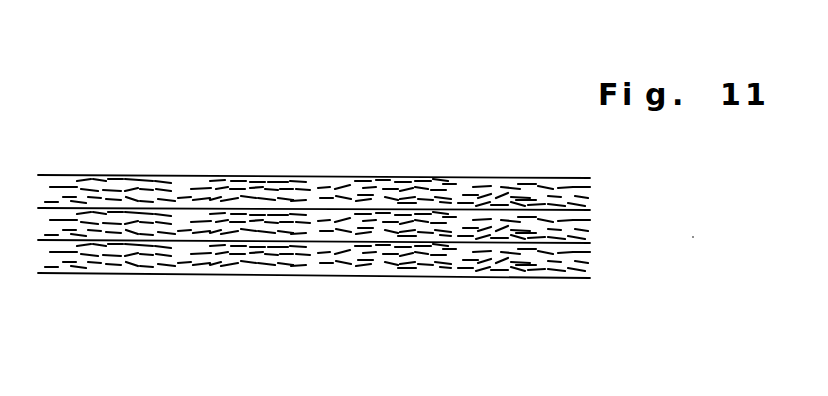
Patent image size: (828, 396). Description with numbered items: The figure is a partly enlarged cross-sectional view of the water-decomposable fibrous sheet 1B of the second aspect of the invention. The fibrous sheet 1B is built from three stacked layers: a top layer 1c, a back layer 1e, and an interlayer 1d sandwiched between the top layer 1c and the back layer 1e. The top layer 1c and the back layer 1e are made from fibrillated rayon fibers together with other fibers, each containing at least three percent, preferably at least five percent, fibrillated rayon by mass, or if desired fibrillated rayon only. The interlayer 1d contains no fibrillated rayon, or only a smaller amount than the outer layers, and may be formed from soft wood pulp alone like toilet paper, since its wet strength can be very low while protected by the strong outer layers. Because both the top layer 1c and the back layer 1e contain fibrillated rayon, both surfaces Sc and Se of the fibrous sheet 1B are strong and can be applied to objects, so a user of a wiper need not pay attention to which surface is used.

The fibrous sheet 1B is at (349, 228).
The top layer 1c is at (462, 187).
The interlayer 1d is at (333, 223).
The back layer 1e is at (423, 268).
The surface of the top layer Sc is at (163, 173).
The surface of the back layer Se is at (93, 280).